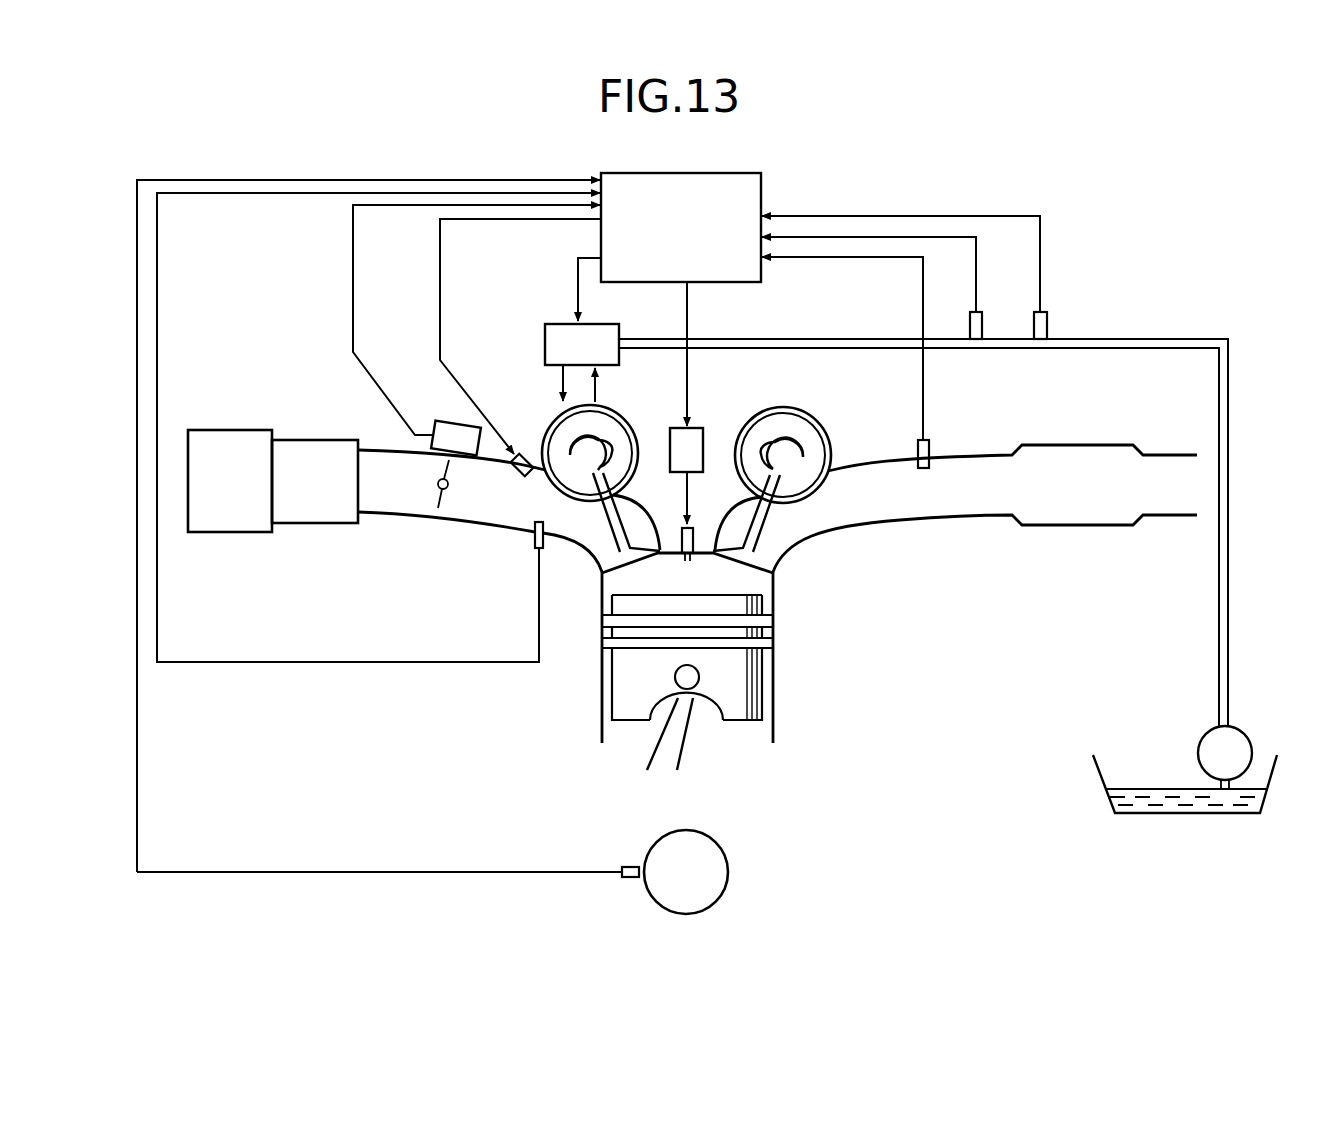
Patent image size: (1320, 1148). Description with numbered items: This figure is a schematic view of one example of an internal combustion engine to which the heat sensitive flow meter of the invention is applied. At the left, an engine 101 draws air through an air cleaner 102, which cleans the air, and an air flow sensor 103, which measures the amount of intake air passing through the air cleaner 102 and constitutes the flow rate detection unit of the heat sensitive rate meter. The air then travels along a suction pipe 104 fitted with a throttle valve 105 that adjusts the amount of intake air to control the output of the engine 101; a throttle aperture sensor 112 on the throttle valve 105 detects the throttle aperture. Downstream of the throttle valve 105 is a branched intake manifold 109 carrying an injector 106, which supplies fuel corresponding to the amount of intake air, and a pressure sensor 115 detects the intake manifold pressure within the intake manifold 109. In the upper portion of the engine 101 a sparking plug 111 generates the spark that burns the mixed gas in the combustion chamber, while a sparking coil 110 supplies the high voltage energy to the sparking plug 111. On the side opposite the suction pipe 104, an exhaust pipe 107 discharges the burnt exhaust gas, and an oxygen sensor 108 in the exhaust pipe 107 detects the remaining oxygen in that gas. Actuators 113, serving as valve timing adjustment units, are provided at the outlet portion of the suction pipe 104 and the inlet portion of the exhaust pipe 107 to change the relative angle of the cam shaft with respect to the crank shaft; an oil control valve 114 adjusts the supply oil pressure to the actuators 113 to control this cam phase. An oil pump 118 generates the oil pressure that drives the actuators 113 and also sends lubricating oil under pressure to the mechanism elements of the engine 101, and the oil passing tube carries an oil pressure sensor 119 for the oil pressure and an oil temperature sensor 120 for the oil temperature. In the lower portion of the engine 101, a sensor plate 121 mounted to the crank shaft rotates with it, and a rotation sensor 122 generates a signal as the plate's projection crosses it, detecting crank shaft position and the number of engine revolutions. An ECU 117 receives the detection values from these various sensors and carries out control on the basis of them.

The engine 101 is at (773, 676).
The air cleaner 102 is at (232, 430).
The air flow sensor 103 is at (325, 440).
The suction pipe 104 is at (395, 512).
The throttle valve 105 is at (442, 490).
The injector 106 is at (513, 447).
The exhaust pipe 107 is at (898, 522).
The oxygen sensor 108 is at (930, 450).
The intake manifold 109 is at (556, 540).
The sparking coil 110 is at (693, 425).
The sparking plug 111 is at (695, 537).
The throttle aperture sensor 112 is at (447, 421).
The actuator 113 is at (635, 410).
The oil control valve 114 is at (600, 323).
The pressure sensor 115 is at (530, 548).
The ECU 117 is at (761, 185).
The oil pump 118 is at (1198, 745).
The oil pressure sensor 119 is at (978, 310).
The oil temperature sensor 120 is at (1042, 310).
The sensor plate 121 is at (713, 840).
The rotation sensor 122 is at (630, 866).